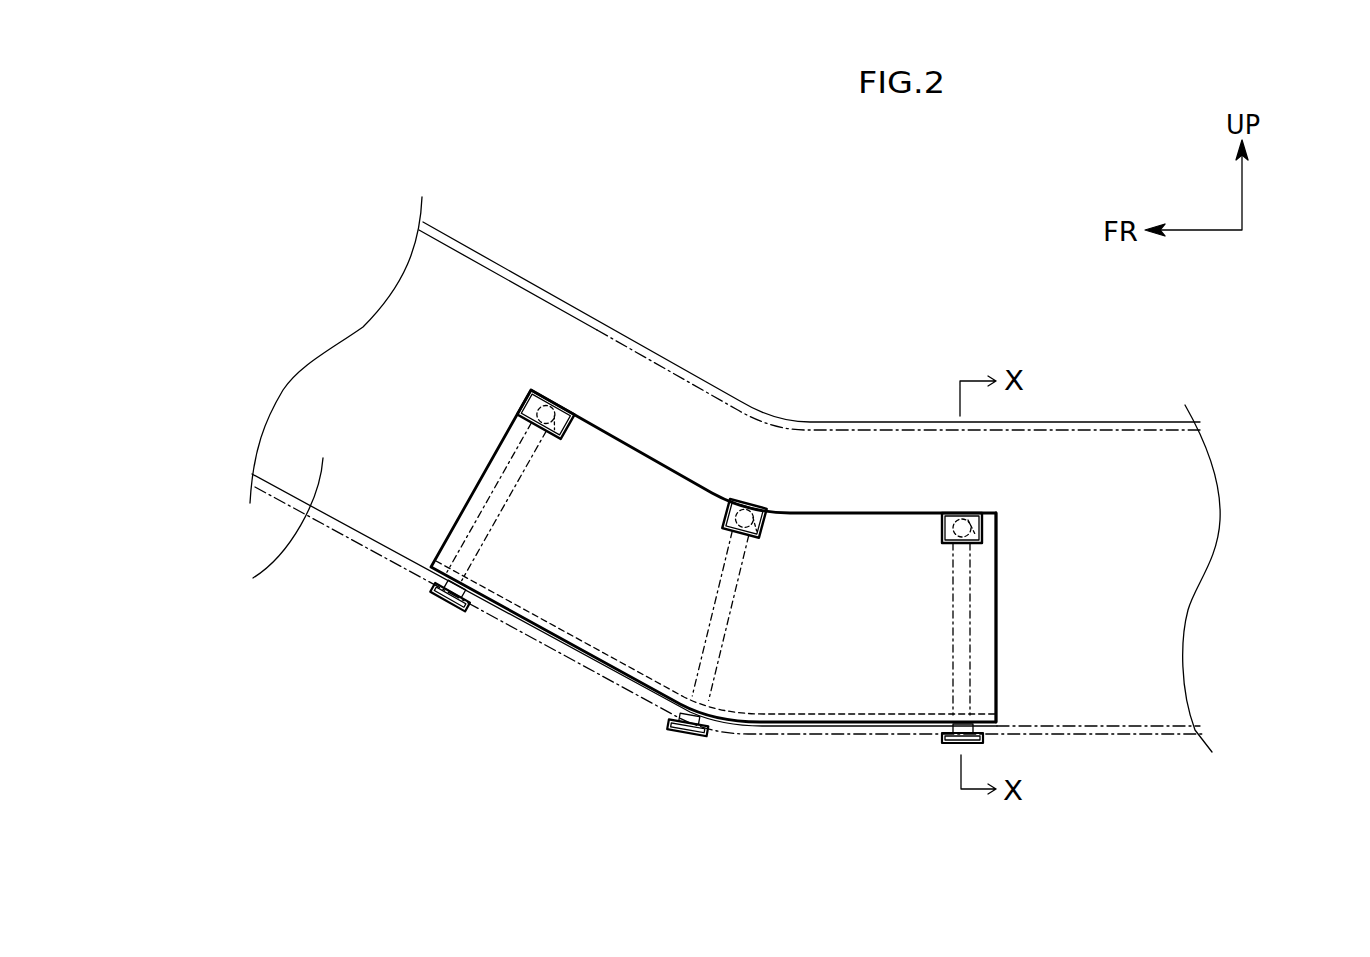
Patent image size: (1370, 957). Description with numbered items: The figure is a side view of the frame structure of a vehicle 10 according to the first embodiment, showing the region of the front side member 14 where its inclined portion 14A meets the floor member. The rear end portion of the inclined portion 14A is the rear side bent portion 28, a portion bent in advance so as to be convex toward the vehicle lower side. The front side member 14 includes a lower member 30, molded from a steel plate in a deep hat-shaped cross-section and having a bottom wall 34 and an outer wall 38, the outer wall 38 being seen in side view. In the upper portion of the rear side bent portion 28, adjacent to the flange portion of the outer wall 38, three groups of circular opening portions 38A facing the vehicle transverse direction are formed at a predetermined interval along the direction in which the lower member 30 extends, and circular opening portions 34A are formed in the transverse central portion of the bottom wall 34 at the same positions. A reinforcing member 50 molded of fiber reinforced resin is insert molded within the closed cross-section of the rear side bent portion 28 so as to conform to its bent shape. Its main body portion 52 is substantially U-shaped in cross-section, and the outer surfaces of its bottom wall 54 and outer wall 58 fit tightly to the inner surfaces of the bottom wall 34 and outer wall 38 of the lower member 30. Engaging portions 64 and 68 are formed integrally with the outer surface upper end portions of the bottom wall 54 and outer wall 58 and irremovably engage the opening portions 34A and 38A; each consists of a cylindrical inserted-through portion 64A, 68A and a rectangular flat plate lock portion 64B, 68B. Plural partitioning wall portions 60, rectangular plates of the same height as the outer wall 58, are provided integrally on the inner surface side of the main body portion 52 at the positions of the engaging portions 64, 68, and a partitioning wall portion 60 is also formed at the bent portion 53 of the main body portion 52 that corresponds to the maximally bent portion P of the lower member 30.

The vehicle lower structure 10 is at (836, 300).
The front side member 14 is at (449, 232).
The inclined portion 14A is at (264, 532).
The rear side bent portion 28 is at (722, 733).
The lower member 30 is at (1165, 740).
The bottom wall 34 is at (1118, 732).
The opening portions 34A is at (452, 614).
The outer wall 38 is at (1180, 583).
The opening portions 38A is at (534, 409).
The reinforcing member 50 is at (999, 540).
The main body portion 52 is at (623, 627).
The bent portion 53 is at (695, 700).
The bottom wall 54 is at (827, 735).
The outer wall 58 is at (713, 598).
The partitioning wall portions 60 is at (493, 512).
The engaging portions 64 is at (452, 618).
The inserted-through portions 64A is at (478, 608).
The lock portions 64B is at (465, 617).
The engaging portions 68 is at (546, 436).
The inserted-through portions 68A is at (558, 405).
The lock portions 68B is at (572, 418).
The maximally bent portion P is at (760, 411).